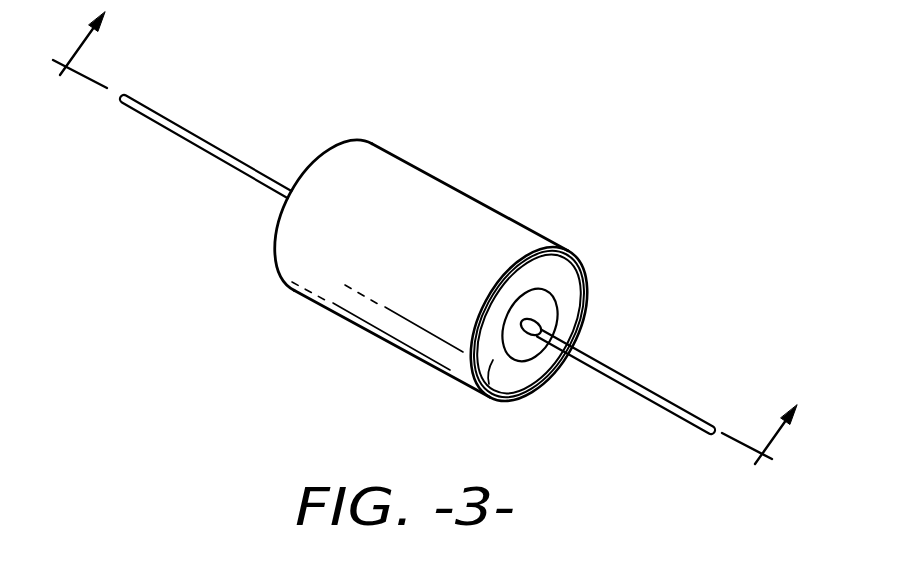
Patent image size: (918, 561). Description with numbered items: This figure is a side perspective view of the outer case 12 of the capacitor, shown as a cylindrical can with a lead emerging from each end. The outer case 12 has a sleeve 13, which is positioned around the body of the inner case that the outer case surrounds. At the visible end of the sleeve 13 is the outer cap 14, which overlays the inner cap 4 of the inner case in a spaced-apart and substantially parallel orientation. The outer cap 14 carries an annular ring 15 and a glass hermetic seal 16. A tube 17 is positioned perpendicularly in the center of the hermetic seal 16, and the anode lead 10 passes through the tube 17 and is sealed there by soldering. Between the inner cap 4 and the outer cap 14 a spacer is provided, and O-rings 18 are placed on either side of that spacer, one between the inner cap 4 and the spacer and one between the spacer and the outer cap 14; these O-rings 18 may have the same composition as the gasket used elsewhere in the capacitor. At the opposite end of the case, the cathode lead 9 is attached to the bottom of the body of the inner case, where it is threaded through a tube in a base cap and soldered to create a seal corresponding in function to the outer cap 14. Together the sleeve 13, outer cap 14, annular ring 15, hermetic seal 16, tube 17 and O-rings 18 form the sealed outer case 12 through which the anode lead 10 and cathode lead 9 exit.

The inner cap 4 is at (425, 232).
The cathode lead 9 is at (207, 140).
The anode lead 10 is at (630, 373).
The outer case 12 is at (476, 181).
The sleeve 13 is at (390, 180).
The outer cap 14 is at (557, 278).
The annular ring 15 is at (485, 398).
The glass hermetic seal 16 is at (542, 307).
The tube 17 is at (526, 343).
The O-rings 18 is at (519, 345).